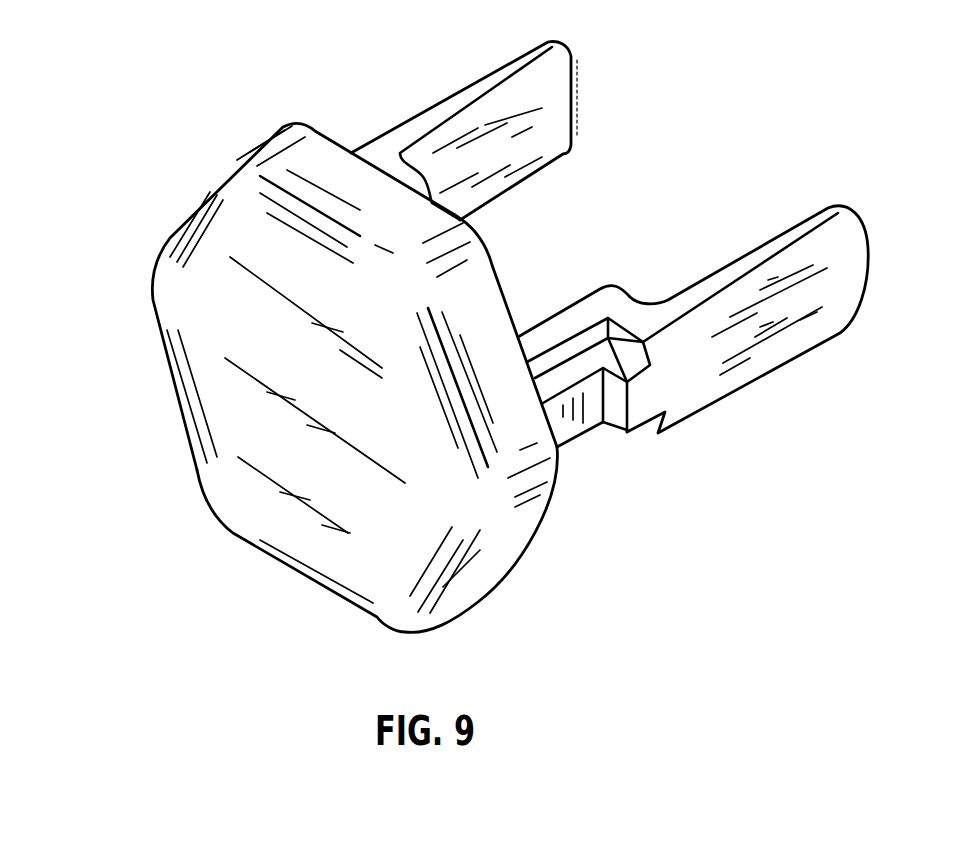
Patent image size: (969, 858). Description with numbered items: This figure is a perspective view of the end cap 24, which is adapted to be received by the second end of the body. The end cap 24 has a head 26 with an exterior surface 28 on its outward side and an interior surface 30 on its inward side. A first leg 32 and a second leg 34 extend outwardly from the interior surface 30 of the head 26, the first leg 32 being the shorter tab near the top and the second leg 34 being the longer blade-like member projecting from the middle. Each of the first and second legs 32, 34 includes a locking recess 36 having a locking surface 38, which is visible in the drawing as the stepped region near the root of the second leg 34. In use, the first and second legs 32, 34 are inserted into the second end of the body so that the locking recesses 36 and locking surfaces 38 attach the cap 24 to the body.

The end cap 24 is at (121, 53).
The head 26 is at (168, 300).
The exterior surface 28 is at (315, 553).
The interior surface 30 is at (492, 262).
The first leg 32 is at (463, 88).
The second leg 34 is at (778, 353).
The locking recess 36 is at (573, 447).
The locking surface 38 is at (620, 432).